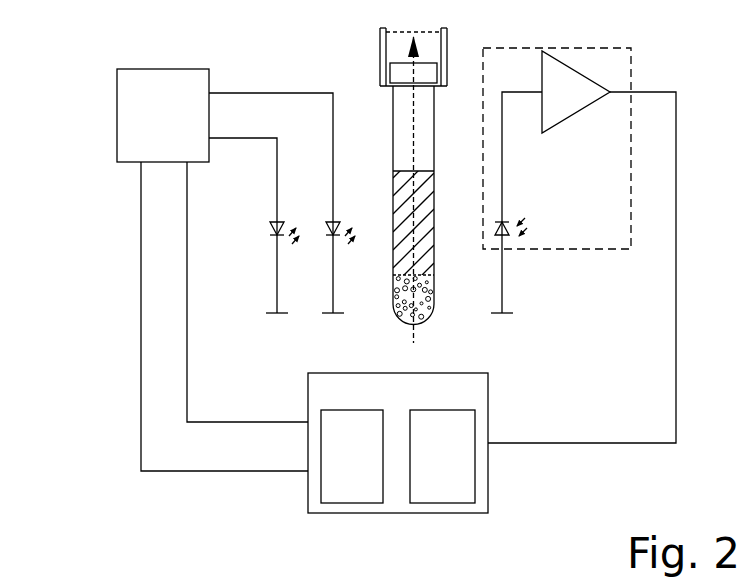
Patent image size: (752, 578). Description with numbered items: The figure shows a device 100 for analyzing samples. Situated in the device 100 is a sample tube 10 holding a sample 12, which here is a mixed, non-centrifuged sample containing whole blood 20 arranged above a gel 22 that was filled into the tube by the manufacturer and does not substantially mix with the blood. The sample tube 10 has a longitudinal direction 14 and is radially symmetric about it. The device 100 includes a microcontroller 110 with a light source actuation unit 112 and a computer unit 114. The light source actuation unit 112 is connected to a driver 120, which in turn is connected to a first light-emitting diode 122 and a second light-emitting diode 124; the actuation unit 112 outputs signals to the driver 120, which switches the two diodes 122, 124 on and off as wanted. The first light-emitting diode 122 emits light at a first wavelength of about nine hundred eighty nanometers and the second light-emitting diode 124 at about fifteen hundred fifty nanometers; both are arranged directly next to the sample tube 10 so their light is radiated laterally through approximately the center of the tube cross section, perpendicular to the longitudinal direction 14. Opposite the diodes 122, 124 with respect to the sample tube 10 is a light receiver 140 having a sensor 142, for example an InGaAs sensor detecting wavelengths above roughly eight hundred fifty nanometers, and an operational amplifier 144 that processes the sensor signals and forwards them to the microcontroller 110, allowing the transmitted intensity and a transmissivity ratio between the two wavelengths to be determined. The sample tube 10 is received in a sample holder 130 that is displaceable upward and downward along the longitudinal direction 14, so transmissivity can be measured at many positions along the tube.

The device for analyzing samples 100 is at (110, 443).
The sample tube 10 is at (430, 163).
The sample 12 is at (388, 216).
The longitudinal direction 14 is at (416, 62).
The whole blood 20 is at (420, 251).
The gel 22 is at (432, 304).
The microcontroller 110 is at (413, 402).
The light source actuation unit 112 is at (373, 468).
The computer unit 114 is at (463, 468).
The driver 120 is at (190, 129).
The first light-emitting diode 122 is at (268, 224).
The second light-emitting diode 124 is at (326, 224).
The sample holder 130 is at (381, 53).
The light receiver 140 is at (593, 228).
The sensor 142 is at (505, 212).
The operational amplifier 144 is at (590, 105).